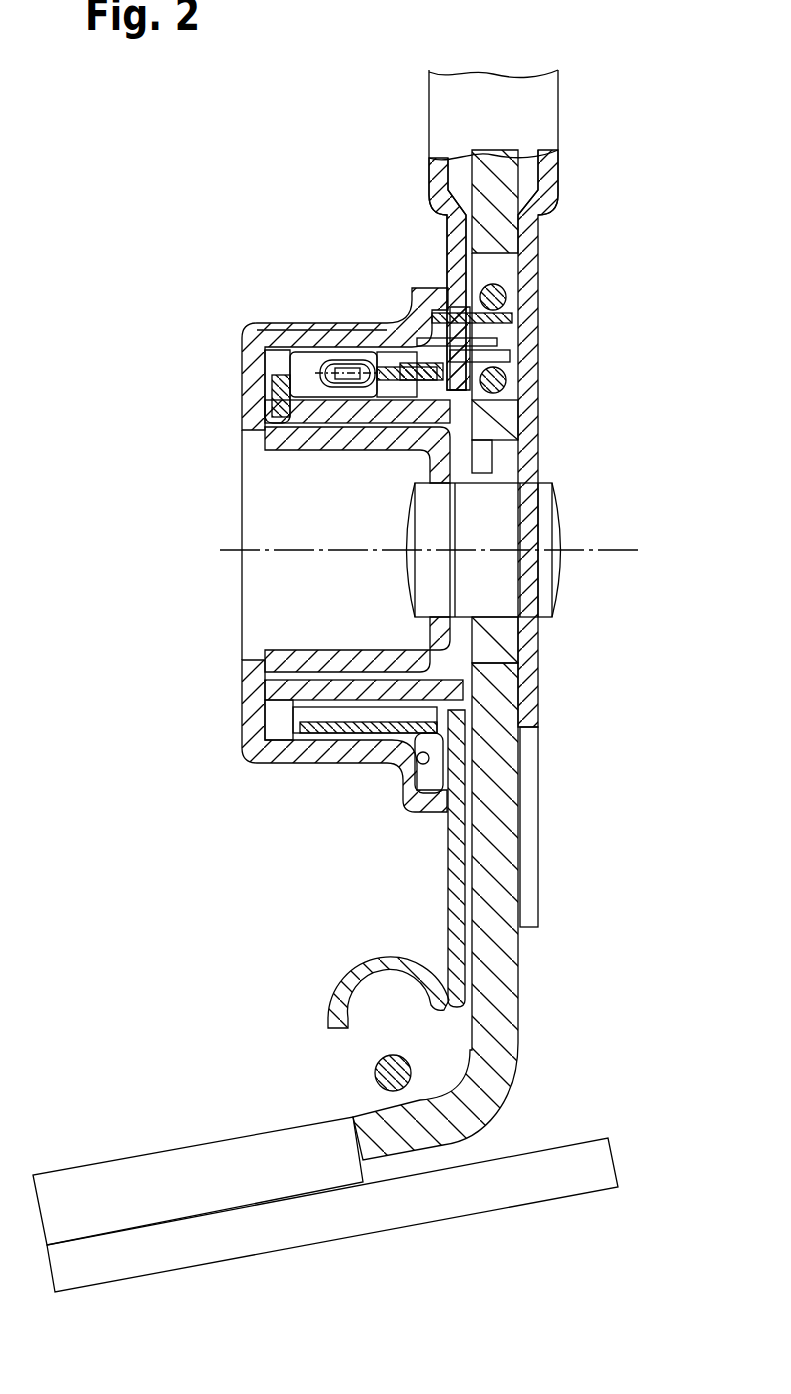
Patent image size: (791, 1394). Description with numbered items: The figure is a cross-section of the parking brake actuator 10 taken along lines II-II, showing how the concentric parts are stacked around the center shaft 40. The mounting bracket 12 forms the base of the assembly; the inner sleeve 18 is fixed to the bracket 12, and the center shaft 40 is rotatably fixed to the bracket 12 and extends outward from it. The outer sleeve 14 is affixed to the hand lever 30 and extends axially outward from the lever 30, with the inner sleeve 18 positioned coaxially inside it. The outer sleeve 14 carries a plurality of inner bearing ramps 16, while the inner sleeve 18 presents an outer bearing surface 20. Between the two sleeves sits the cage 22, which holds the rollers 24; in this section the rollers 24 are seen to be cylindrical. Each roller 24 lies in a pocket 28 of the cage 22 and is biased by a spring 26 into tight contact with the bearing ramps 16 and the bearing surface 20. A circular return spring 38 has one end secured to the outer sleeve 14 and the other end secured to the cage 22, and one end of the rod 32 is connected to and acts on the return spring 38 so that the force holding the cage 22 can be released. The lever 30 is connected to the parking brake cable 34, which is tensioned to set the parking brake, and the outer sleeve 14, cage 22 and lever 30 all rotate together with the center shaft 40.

The parking brake actuator 10 is at (185, 638).
The mounting bracket 12 is at (118, 1188).
The outer sleeve 14 is at (250, 353).
The inner bearing ramps 16 is at (283, 358).
The inner sleeve 18 is at (278, 415).
The outer bearing surface 20 is at (285, 430).
The cage 22 is at (330, 733).
The rollers 24 is at (320, 358).
The spring 26 is at (353, 358).
The pocket 28 is at (273, 377).
The lever 30 is at (548, 102).
The rod 32 is at (510, 292).
The parking brake cable 34 is at (411, 1070).
The return spring 38 is at (485, 342).
The center shaft 40 is at (560, 523).